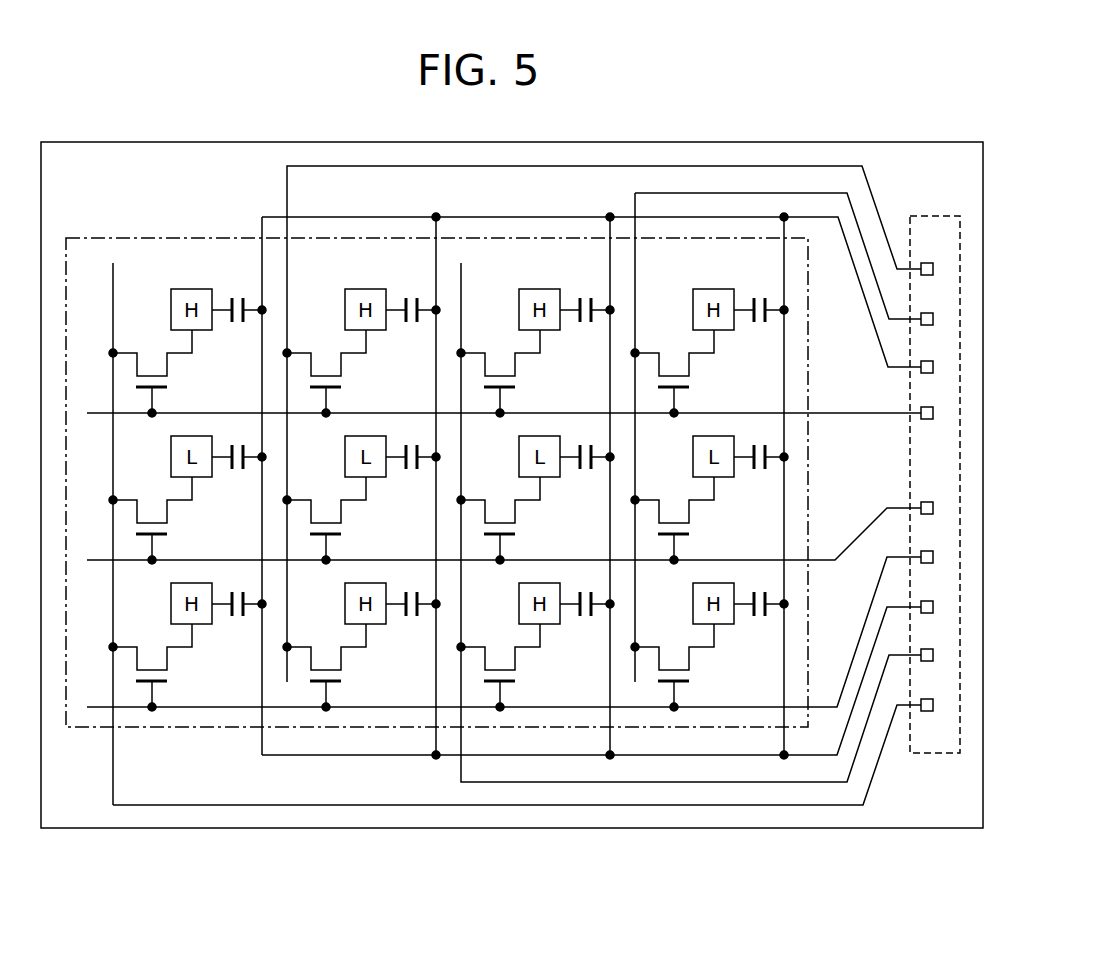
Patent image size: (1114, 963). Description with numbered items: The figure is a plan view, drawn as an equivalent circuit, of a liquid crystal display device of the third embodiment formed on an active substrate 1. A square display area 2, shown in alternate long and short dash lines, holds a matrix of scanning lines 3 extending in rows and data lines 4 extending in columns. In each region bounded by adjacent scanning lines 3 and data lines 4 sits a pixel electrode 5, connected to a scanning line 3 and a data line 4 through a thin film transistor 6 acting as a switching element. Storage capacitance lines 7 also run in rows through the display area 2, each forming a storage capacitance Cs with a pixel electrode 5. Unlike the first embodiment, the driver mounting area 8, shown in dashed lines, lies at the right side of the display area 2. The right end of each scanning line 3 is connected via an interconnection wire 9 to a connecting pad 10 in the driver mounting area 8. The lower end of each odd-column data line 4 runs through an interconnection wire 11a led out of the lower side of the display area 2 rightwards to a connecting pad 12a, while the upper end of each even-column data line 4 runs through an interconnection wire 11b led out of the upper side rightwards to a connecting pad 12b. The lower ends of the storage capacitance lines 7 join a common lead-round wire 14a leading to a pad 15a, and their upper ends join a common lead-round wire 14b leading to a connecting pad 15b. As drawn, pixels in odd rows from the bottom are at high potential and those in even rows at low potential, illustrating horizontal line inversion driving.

The active substrate 1 is at (985, 177).
The display area 2 is at (223, 238).
The scanning line 3 is at (731, 412).
The data line 4 is at (115, 592).
The pixel electrode 5 is at (185, 288).
The thin film transistor 6 is at (153, 353).
The storage capacitance line 7 is at (261, 664).
The driver mounting area 8 is at (934, 754).
The interconnection wire 9 is at (849, 416).
The connecting pad 10 is at (933, 413).
The interconnection wire 11a is at (250, 806).
The interconnection wire 11b is at (340, 166).
The connecting pad 12a is at (933, 655).
The connecting pad 12b is at (933, 269).
The common lead-round wire 14a is at (360, 756).
The common lead-round wire 14b is at (593, 217).
The data line terminal 15a is at (933, 607).
The connecting pad 15b is at (933, 367).
The storage capacitance Cs is at (239, 326).